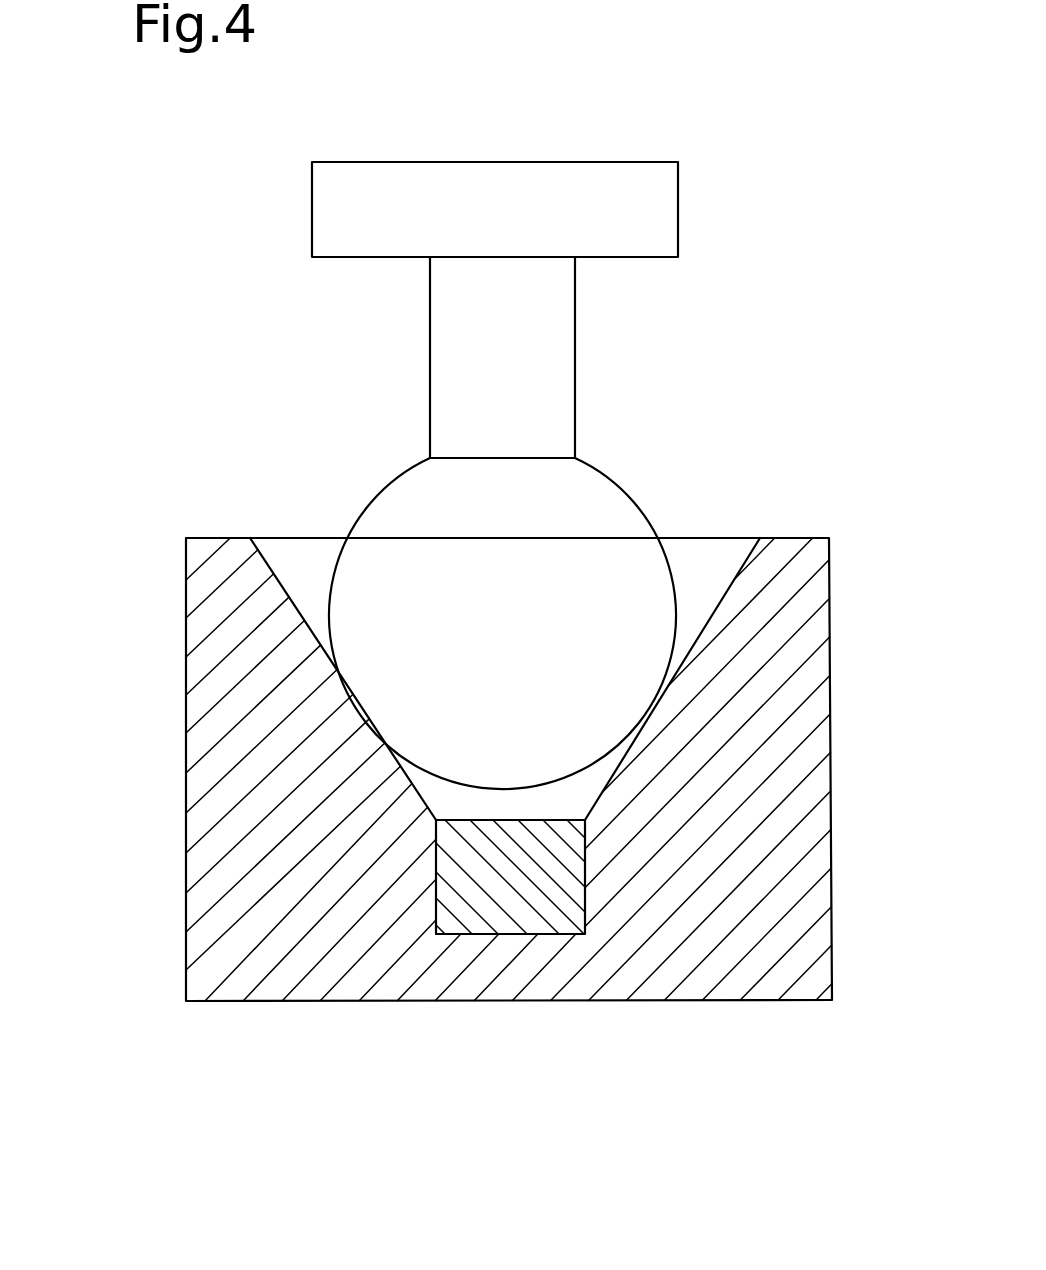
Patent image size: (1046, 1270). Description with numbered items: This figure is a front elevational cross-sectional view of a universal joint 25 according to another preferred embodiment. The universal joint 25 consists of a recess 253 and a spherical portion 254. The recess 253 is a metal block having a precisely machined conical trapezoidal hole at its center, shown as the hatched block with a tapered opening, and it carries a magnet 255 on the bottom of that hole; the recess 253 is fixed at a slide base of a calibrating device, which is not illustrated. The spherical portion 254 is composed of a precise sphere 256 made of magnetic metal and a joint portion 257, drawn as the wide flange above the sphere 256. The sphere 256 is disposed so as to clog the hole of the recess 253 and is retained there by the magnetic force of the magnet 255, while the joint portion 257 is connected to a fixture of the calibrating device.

The universal joint 25 is at (345, 1001).
The recess 253 is at (225, 557).
The spherical portion 254 is at (577, 326).
The magnet 255 is at (548, 912).
The sphere 256 is at (593, 505).
The joint portion 257 is at (553, 199).